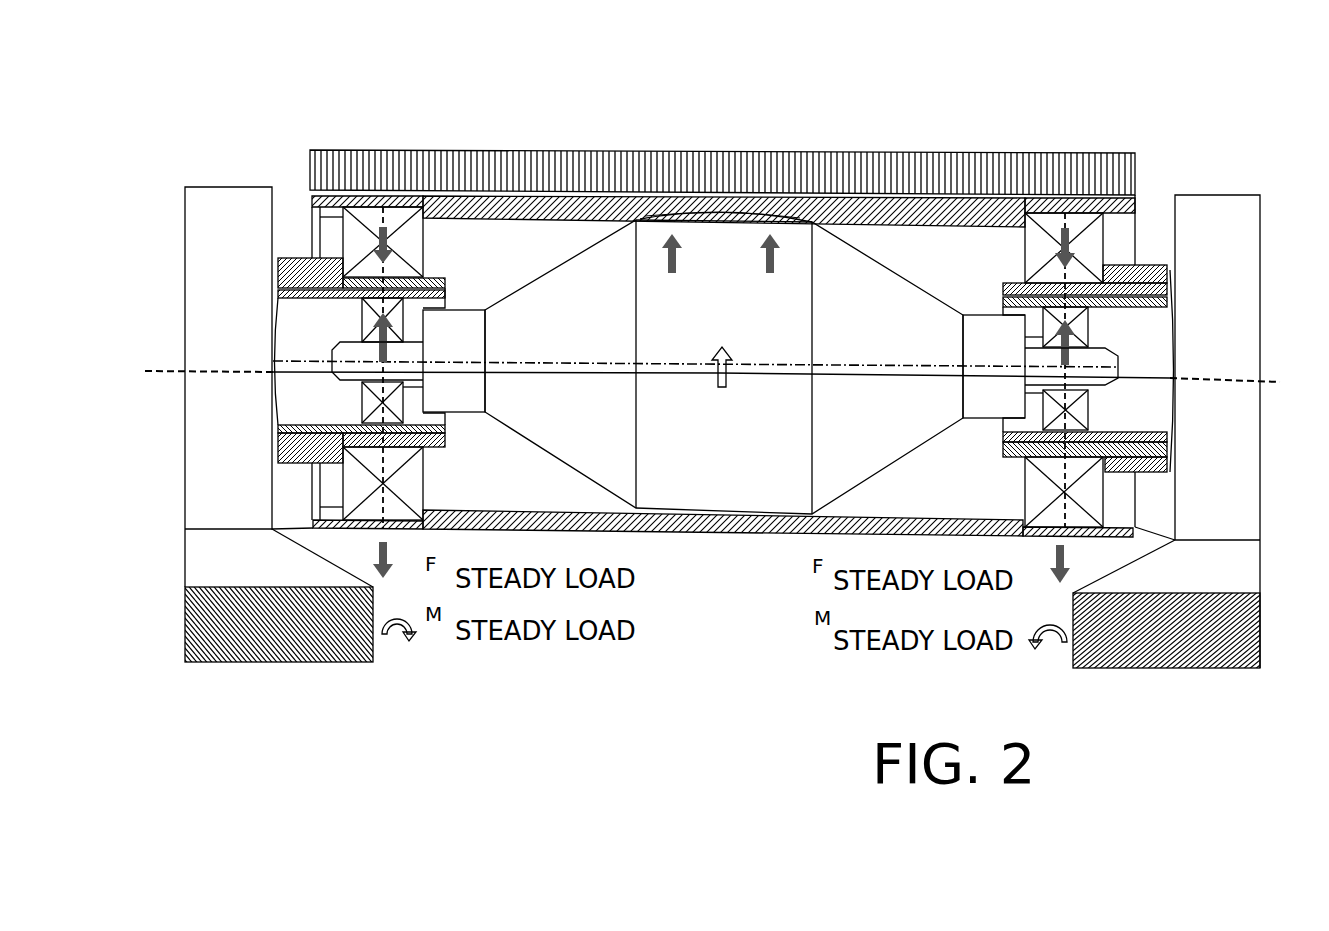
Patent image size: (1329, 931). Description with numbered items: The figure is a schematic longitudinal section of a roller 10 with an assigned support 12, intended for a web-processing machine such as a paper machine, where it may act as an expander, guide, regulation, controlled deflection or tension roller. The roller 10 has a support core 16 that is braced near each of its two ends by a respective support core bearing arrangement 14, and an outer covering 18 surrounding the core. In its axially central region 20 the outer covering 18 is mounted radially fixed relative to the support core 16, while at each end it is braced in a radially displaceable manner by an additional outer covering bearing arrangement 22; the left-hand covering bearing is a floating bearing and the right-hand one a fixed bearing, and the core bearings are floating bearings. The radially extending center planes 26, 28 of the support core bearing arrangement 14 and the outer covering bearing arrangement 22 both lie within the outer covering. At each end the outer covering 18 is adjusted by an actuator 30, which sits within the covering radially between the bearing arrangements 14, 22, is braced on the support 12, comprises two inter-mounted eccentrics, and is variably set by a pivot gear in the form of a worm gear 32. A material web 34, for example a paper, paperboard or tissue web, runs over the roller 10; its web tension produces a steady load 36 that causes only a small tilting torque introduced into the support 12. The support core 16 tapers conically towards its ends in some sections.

The roller 10 is at (772, 120).
The support 12 is at (362, 650).
The bearing arrangement 14 is at (360, 407).
The support core 16 is at (585, 280).
The outer covering 18 is at (750, 527).
The axially central region 20 is at (727, 207).
The additional bearing arrangement 22 is at (313, 200).
The center plane 26 is at (358, 408).
The center plane 28 is at (352, 243).
The actuator 30 is at (343, 462).
The worm gear 32 is at (1233, 281).
The material web 34 is at (481, 160).
The steady load 36 is at (710, 153).